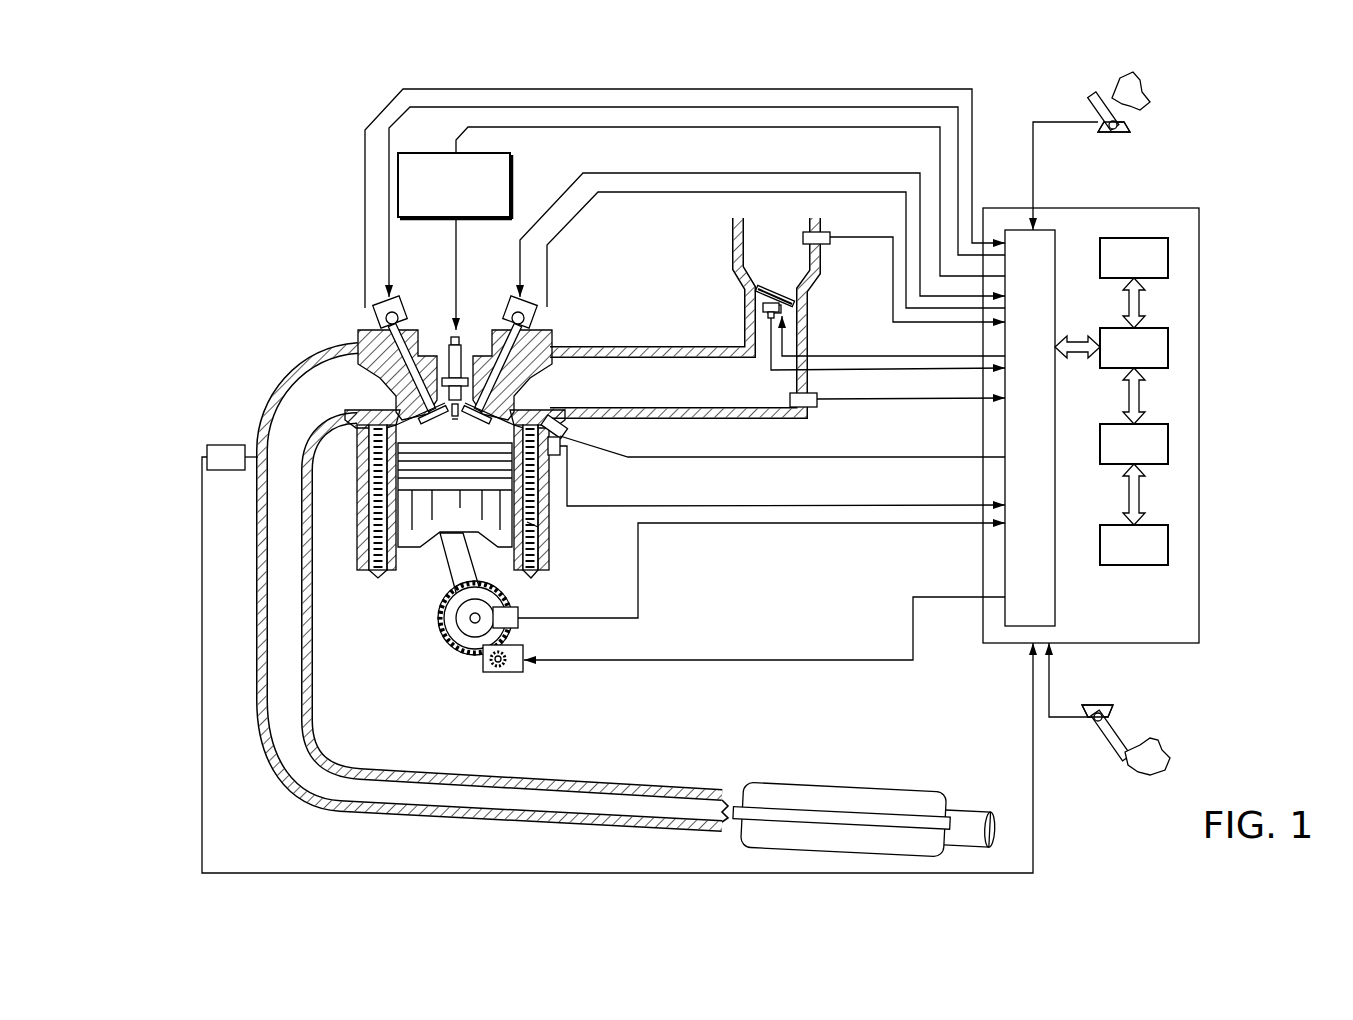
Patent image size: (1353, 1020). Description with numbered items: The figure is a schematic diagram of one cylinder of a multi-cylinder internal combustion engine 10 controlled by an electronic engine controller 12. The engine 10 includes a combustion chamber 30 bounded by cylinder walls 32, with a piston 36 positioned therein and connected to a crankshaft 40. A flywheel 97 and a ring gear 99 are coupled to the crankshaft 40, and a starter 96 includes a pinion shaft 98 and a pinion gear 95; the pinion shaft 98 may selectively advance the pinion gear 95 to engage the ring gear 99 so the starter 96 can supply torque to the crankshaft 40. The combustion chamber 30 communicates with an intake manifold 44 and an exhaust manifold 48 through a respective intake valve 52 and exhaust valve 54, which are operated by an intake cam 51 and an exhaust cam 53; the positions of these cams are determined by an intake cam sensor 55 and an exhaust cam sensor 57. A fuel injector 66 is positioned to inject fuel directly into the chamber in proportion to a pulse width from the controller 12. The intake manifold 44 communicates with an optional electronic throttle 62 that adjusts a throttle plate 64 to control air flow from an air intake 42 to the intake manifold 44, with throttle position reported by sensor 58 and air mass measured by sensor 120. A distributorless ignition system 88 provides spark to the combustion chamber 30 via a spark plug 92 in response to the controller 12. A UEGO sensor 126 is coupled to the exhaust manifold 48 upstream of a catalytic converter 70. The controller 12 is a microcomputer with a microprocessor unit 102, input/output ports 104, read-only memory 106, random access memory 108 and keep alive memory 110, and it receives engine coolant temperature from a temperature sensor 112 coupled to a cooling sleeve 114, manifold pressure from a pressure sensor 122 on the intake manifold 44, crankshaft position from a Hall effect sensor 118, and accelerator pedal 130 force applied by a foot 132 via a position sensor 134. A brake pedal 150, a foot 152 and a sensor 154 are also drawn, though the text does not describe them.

The internal combustion engine 10 is at (296, 287).
The electronic engine controller 12 is at (1199, 210).
The combustion chamber 30 is at (453, 428).
The cylinder walls 32 is at (398, 560).
The piston 36 is at (438, 523).
The crankshaft 40 is at (462, 648).
The air intake 42 is at (761, 262).
The intake manifold 44 is at (700, 393).
The exhaust manifold 48 is at (337, 400).
The intake cam 51 is at (475, 323).
The intake valve 52 is at (497, 392).
The exhaust cam 53 is at (402, 300).
The exhaust valve 54 is at (395, 400).
The intake cam sensor 55 is at (530, 316).
The exhaust cam sensor 57 is at (380, 318).
The throttle position sensor 58 is at (757, 316).
The electronic throttle 62 is at (803, 295).
The throttle plate 64 is at (762, 290).
The fuel injector 66 is at (560, 425).
The catalytic converter 70 is at (760, 783).
The distributorless ignition system 88 is at (414, 153).
The spark plug 92 is at (460, 336).
The pinion gear 95 is at (503, 668).
The starter 96 is at (517, 672).
The flywheel 97 is at (446, 624).
The pinion shaft 98 is at (493, 668).
The ring gear 99 is at (468, 670).
The microprocessor unit 102 is at (1168, 348).
The input/output ports 104 is at (1057, 238).
The read-only memory 106 is at (1168, 258).
The random access memory 108 is at (1168, 445).
The keep alive memory 110 is at (1168, 545).
The temperature sensor 112 is at (568, 458).
The cooling sleeve 114 is at (533, 523).
The Hall effect sensor 118 is at (515, 610).
The air mass sensor 120 is at (820, 231).
The pressure sensor 122 is at (808, 409).
The Universal Exhaust Gas Oxygen sensor 126 is at (207, 448).
The accelerator pedal 130 is at (1100, 97).
The foot 132 is at (1142, 90).
The position sensor 134 is at (1150, 126).
The brake pedal 150 is at (1120, 765).
The foot 152 is at (1158, 742).
The brake pedal position sensor 154 is at (1090, 712).